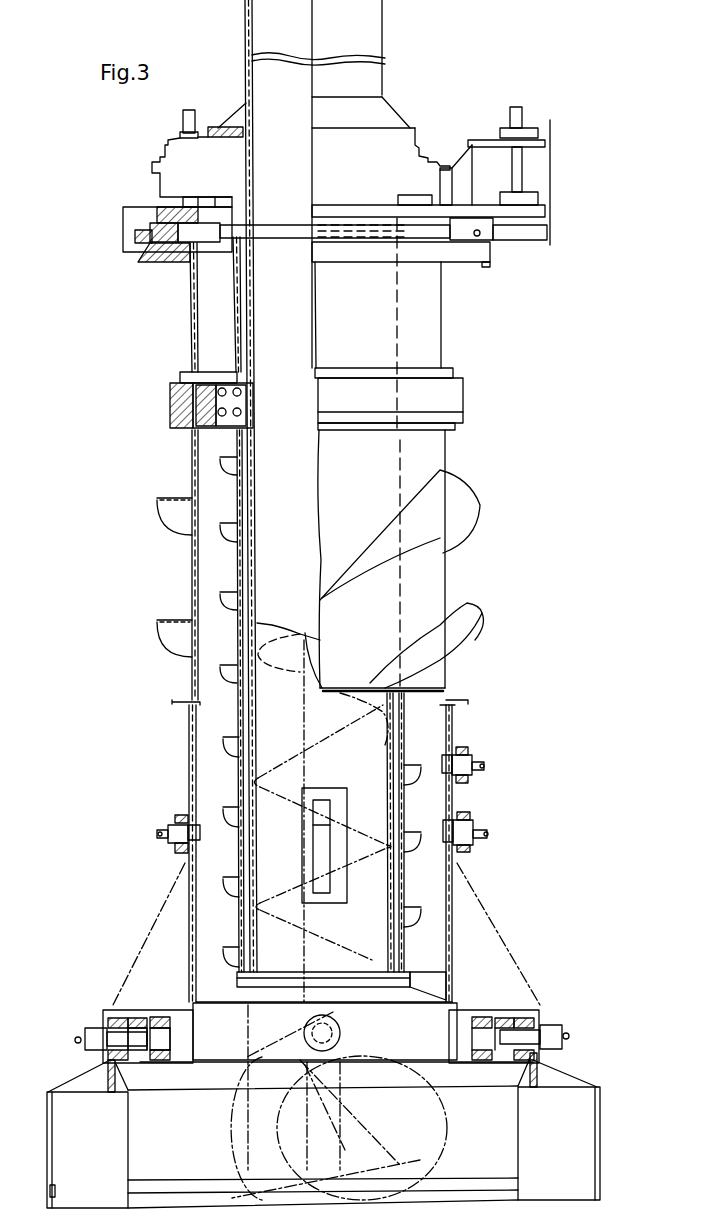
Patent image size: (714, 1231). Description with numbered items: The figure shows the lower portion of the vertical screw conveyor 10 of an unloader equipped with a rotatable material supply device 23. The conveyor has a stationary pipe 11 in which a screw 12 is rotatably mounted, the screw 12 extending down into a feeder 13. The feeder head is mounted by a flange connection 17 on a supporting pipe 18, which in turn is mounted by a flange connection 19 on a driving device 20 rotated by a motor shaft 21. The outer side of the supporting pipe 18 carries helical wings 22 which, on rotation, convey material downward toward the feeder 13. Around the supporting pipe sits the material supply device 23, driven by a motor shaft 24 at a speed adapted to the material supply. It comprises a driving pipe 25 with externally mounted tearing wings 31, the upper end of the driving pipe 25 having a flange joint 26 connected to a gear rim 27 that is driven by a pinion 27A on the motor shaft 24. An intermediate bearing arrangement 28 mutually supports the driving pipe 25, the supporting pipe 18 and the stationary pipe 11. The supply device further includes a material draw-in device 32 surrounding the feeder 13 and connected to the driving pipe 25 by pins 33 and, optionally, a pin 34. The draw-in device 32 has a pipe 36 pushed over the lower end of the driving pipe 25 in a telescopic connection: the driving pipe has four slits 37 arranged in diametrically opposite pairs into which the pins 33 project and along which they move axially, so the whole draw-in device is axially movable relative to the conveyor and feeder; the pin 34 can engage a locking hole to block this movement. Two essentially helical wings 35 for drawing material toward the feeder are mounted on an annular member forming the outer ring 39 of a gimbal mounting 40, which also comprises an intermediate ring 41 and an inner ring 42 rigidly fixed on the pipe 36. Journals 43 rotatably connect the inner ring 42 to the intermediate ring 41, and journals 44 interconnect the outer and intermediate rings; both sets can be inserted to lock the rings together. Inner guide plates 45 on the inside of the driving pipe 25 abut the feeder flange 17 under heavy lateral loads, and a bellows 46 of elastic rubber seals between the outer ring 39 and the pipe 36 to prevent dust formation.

The screw conveyor 10 is at (390, 71).
The stationary pipe 11 is at (336, 33).
The screw 12 is at (385, 1105).
The feeder 13 is at (246, 1104).
The flange connection 17 is at (238, 978).
The supporting pipe 18 is at (248, 918).
The flange connection 19 is at (218, 262).
The driving device 20 is at (150, 162).
The motor shaft 21 is at (183, 118).
The helical wings 22 is at (232, 598).
The material supply device 23 is at (450, 565).
The motor shaft 24 is at (512, 110).
The driving pipe 25 is at (192, 570).
The flange joint 26 is at (140, 263).
The gear rim 27 is at (135, 236).
The pinion 27A is at (530, 262).
The intermediate bearing arrangement 28 is at (165, 408).
The tearing wings 31 is at (480, 605).
The material draw-in device 32 is at (598, 1084).
The pins 33 is at (168, 828).
The pin 34 is at (470, 760).
The helical wings 35 is at (47, 1128).
The pipe 36 is at (185, 888).
The slits 37 is at (335, 800).
The outer ring 39 is at (108, 1075).
The gimbal mounting 40 is at (110, 1010).
The intermediate ring 41 is at (147, 1020).
The inner ring 42 is at (165, 1062).
The journals 43 is at (338, 1035).
The journals 44 is at (95, 1030).
The inner guide plates 45 is at (430, 970).
The bellows 46 is at (498, 925).